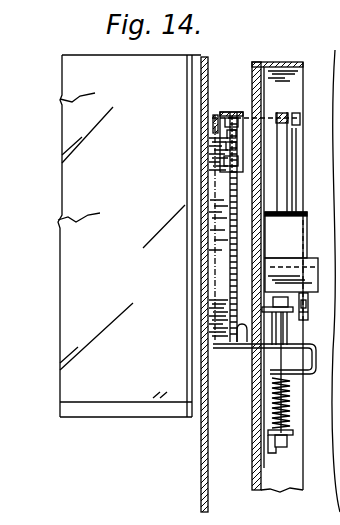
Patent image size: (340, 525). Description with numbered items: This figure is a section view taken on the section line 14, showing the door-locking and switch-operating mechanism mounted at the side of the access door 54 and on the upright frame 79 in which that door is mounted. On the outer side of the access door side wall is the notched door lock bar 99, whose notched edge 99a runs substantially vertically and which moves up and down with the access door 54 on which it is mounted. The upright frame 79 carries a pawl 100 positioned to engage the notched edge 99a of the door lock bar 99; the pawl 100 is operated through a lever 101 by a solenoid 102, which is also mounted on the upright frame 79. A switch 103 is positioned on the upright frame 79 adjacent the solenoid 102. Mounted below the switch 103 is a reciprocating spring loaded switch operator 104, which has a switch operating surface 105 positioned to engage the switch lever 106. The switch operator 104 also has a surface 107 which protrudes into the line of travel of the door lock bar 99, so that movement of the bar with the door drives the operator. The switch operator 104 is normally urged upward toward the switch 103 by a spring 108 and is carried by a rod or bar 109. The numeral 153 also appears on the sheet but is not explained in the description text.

The section line 14 is at (339, 29).
The access door 54 is at (52, 78).
The upright frame 79 is at (200, 454).
The door lock bar 99 is at (230, 246).
The notched edge 99a is at (214, 173).
The pawl 100 is at (224, 152).
The lever 101 is at (286, 112).
The solenoid 102 is at (310, 217).
The switch 103 is at (280, 257).
The switch operator 104 is at (300, 350).
The switch operating surface 105 is at (318, 276).
The switch lever 106 is at (307, 312).
The surface 107 is at (236, 331).
The spring 108 is at (275, 392).
The rod or bar 109 is at (284, 355).
The member 153 is at (10, 492).